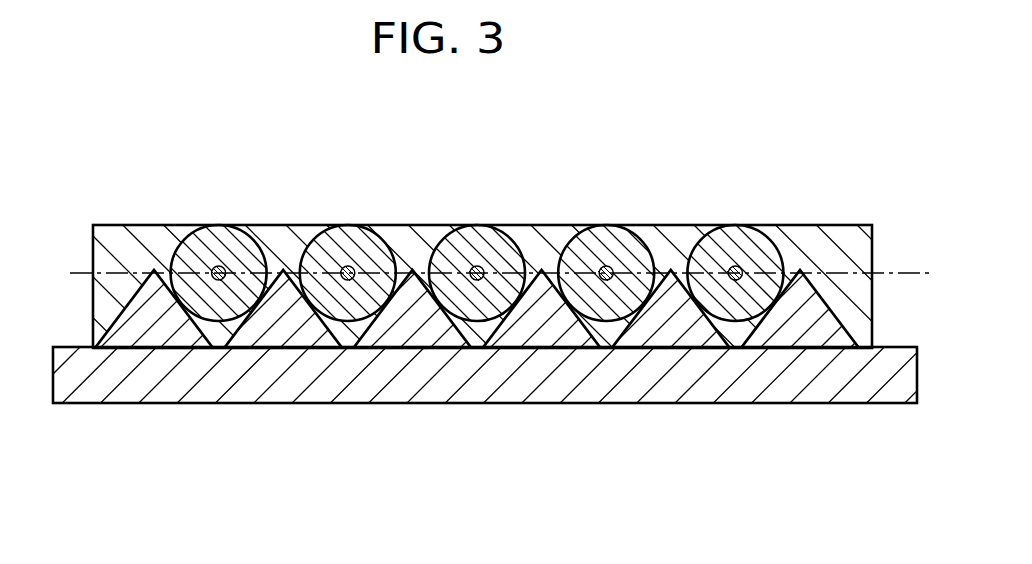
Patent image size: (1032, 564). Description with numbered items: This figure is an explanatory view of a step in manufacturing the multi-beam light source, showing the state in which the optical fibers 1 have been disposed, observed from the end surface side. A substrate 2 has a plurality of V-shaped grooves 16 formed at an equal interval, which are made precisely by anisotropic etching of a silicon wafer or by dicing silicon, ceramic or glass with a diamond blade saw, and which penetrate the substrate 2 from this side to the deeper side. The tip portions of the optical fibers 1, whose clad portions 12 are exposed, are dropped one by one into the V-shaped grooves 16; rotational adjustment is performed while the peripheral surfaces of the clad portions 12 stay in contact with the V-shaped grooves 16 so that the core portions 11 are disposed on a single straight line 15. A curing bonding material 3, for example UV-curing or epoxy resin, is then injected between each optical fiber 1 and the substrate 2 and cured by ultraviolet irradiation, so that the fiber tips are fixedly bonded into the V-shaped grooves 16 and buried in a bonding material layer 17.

The optical fiber 1 is at (220, 227).
The core portion 11 is at (222, 268).
The clad portion 12 is at (200, 245).
The substrate 2 is at (170, 350).
The bonding material 3 is at (105, 243).
The single straight line 15 is at (917, 272).
The V-shaped groove 16 is at (340, 336).
The bonding material layer 17 is at (838, 232).